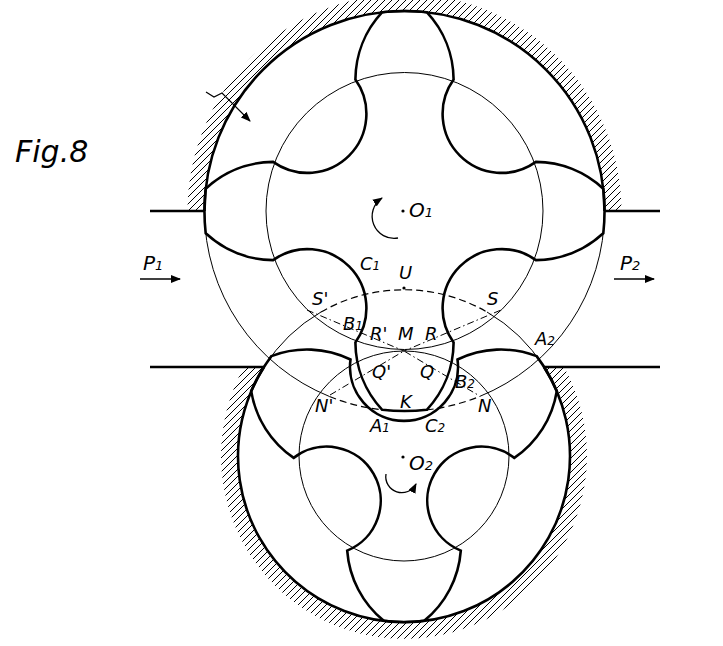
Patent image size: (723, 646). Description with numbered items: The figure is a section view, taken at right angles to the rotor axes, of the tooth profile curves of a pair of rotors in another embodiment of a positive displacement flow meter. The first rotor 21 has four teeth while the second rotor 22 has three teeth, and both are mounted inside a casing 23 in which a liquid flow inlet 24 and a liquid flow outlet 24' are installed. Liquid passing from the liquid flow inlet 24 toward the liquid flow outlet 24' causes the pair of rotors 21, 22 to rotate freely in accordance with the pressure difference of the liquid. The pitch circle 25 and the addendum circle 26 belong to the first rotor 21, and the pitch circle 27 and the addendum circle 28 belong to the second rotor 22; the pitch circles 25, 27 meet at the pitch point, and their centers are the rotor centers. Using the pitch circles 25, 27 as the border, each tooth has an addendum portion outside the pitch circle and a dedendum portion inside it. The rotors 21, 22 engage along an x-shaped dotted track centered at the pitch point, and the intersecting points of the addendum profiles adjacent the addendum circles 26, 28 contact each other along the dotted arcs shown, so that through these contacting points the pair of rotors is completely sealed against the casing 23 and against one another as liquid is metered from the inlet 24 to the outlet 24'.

The first rotor 21 is at (418, 110).
The second rotor 22 is at (417, 592).
The casing 23 is at (632, 114).
The liquid flow inlet 24 is at (207, 289).
The liquid flow outlet 24' is at (602, 289).
The pitch circle of rotor 21 25 is at (285, 280).
The addendum circle of rotor 21 26 is at (218, 286).
The pitch circle of rotor 22 27 is at (302, 494).
The addendum circle of rotor 22 28 is at (232, 494).
The working chamber A is at (203, 109).